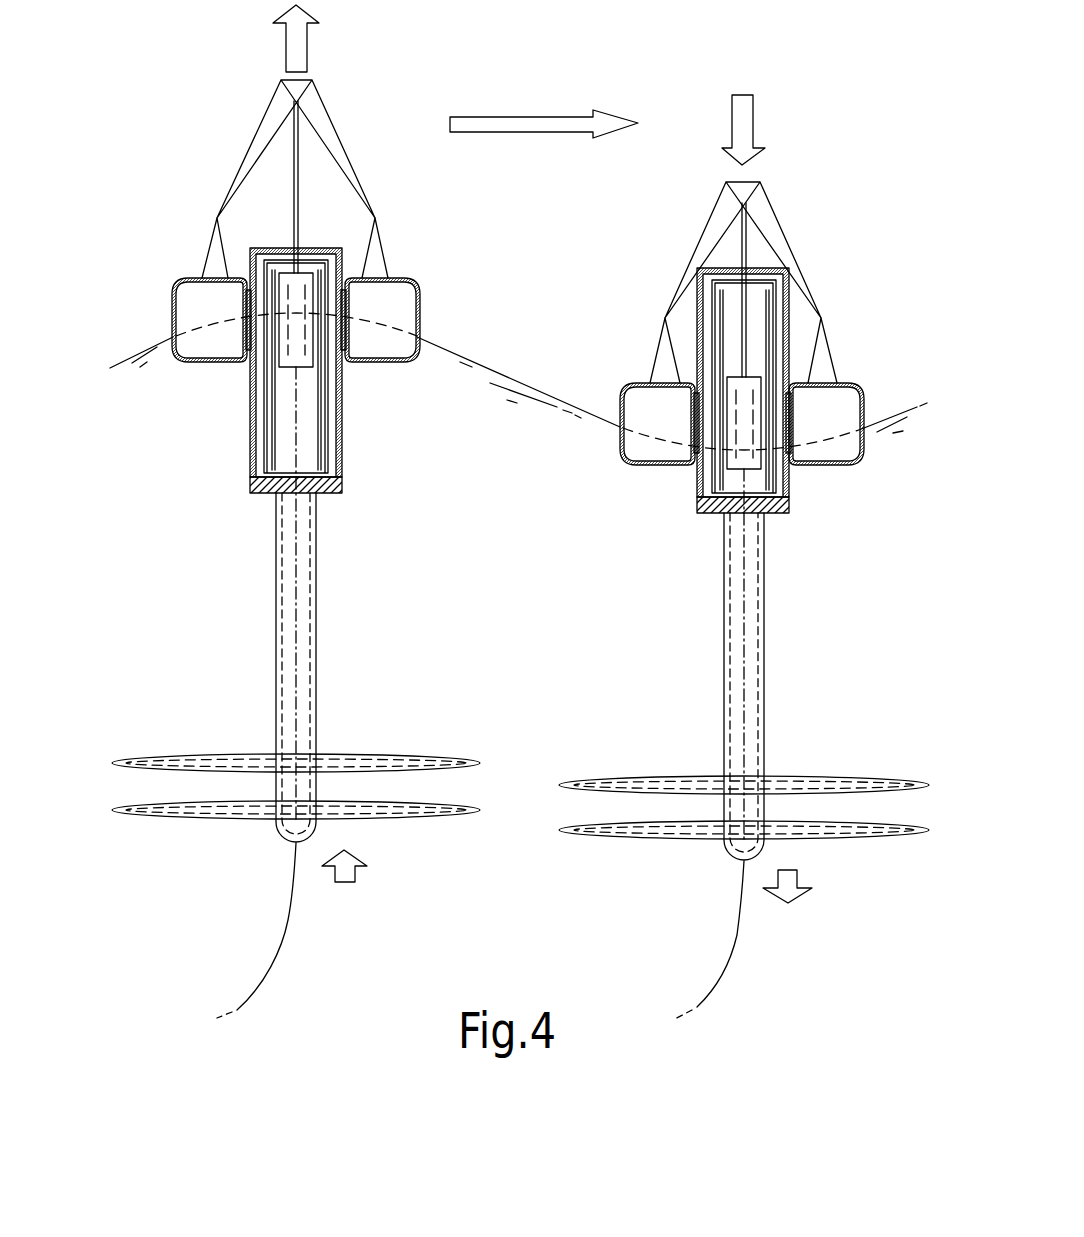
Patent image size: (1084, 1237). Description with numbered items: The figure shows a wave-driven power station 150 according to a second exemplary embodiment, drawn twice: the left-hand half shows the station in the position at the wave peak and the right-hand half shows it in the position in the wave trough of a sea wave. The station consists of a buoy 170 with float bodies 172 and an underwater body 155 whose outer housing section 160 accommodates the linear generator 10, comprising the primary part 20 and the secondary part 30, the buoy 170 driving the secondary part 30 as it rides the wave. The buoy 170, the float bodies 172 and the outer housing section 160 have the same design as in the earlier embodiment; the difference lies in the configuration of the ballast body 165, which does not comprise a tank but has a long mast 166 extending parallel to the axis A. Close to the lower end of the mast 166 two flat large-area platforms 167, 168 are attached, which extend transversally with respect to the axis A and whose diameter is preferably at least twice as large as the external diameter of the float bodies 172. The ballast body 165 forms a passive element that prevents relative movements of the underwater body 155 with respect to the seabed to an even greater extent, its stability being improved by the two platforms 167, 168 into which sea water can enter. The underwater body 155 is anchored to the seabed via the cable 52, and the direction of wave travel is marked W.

The linear generator 10 is at (308, 370).
The primary part 20 is at (267, 388).
The secondary part 30 is at (294, 278).
The cable 52 is at (287, 933).
The wave-driven power station 150 is at (836, 198).
The underwater body 155 is at (477, 676).
The outer housing section 160 is at (340, 437).
The ballast body 165 is at (520, 693).
The mast 166 is at (278, 693).
The platform 167 is at (188, 757).
The platform 168 is at (197, 823).
The buoy 170 is at (186, 220).
The float body 172 is at (192, 303).
The axis A is at (296, 618).
The wave direction W is at (535, 122).